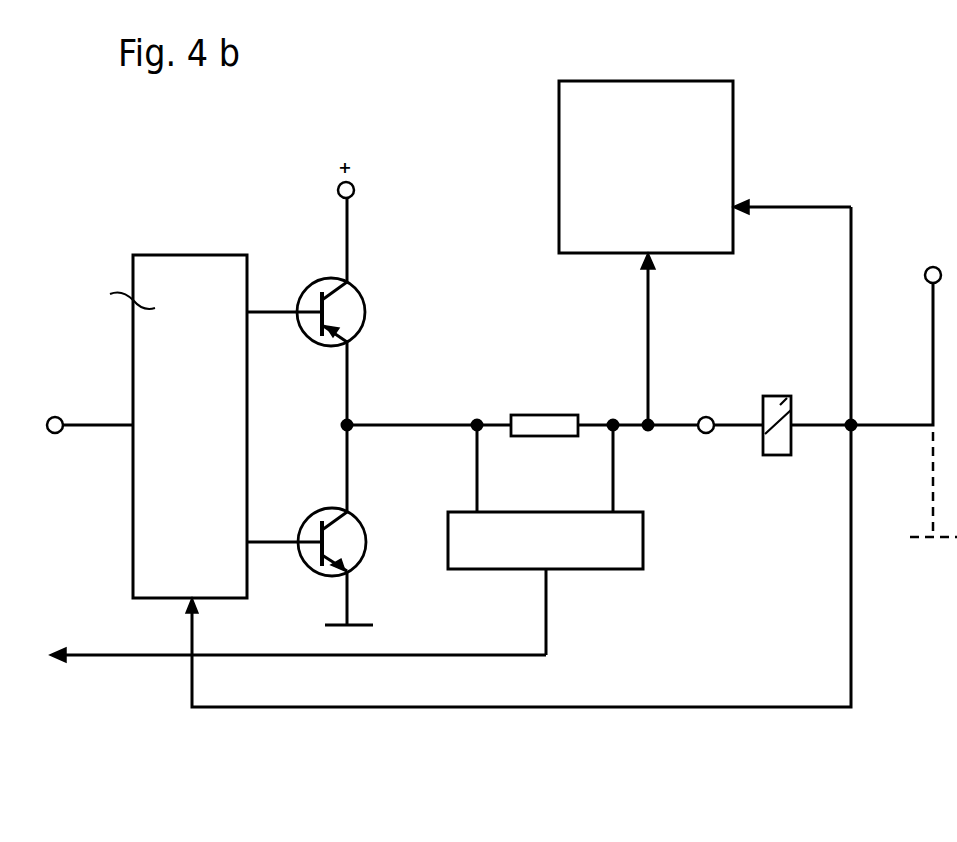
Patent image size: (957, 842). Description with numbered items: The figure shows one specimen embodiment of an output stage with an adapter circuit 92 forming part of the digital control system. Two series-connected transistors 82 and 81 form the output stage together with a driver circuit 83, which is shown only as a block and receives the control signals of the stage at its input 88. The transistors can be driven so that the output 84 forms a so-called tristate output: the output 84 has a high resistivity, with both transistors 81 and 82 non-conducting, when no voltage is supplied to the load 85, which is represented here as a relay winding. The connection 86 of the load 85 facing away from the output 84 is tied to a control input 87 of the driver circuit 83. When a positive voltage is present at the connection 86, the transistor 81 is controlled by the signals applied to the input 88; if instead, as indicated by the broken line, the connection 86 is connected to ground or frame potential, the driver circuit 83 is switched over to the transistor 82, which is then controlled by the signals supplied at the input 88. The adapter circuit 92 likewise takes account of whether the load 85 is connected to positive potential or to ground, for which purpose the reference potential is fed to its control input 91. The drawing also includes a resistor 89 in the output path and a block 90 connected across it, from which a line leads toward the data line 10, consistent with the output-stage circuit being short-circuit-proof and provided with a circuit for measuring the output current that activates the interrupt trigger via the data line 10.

The data line 10 is at (93, 652).
The transistor 81 is at (353, 545).
The transistor 82 is at (352, 317).
The driver circuit 83 is at (205, 236).
The output 84 is at (716, 400).
The load 85 is at (792, 378).
The connection 86 is at (930, 403).
The control input 87 is at (190, 598).
The input 88 is at (58, 413).
The resistor 89 is at (563, 394).
The detection circuit 90 is at (624, 553).
The control input 91 is at (733, 207).
The adapter circuit 92 is at (717, 126).